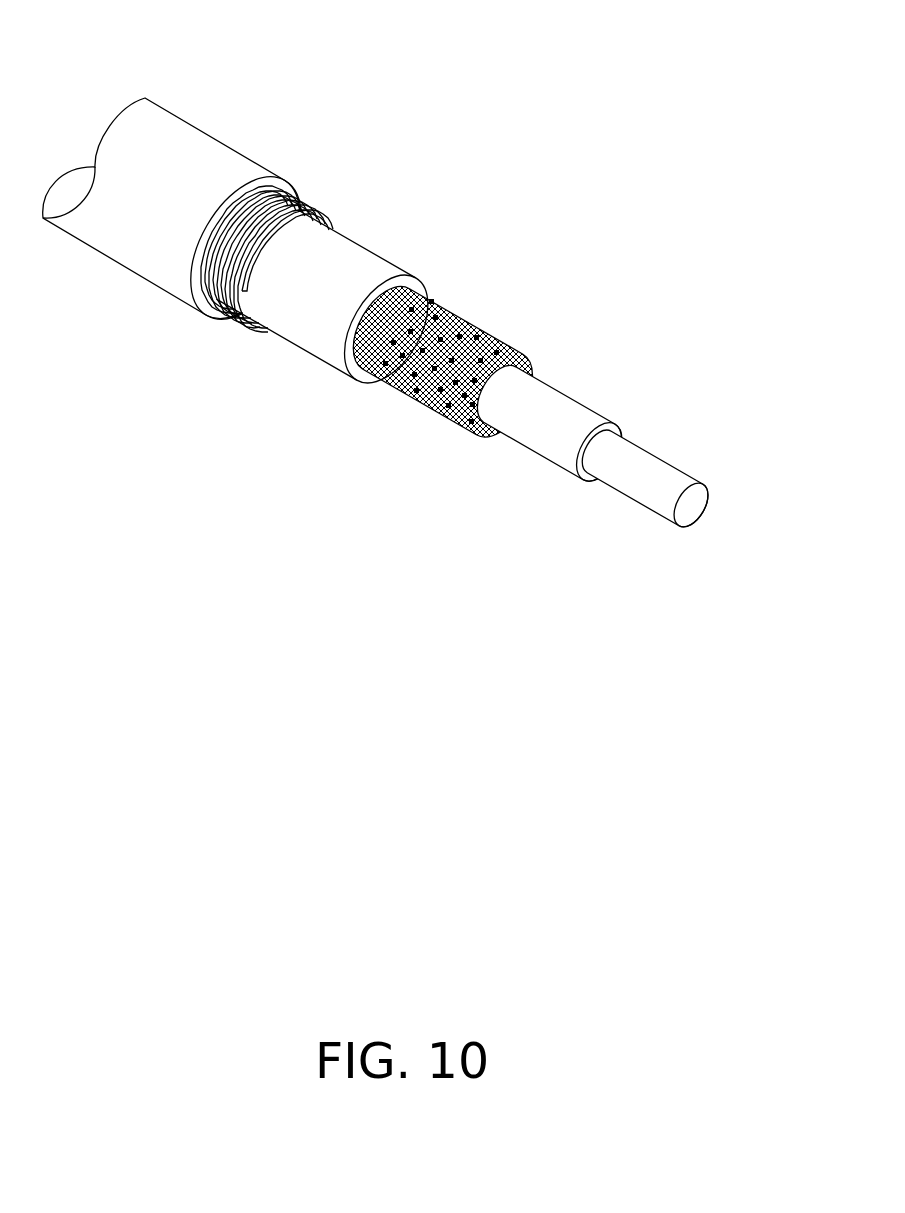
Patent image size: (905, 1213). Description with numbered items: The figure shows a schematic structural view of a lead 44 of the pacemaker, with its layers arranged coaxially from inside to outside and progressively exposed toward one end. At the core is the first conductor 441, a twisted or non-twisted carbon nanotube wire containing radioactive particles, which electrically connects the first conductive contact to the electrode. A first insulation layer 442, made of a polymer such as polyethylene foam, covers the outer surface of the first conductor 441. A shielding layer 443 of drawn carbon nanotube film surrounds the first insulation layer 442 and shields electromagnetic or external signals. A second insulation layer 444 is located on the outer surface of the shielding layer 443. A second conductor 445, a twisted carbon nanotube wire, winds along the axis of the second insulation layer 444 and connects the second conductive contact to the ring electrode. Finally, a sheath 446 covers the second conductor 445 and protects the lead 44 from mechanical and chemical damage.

The lead 44 is at (396, 273).
The first conductor 441 is at (650, 470).
The first insulation layer 442 is at (556, 405).
The shielding layer 443 is at (462, 328).
The second insulation layer 444 is at (357, 268).
The second conductor 445 is at (310, 212).
The sheath 446 is at (194, 155).